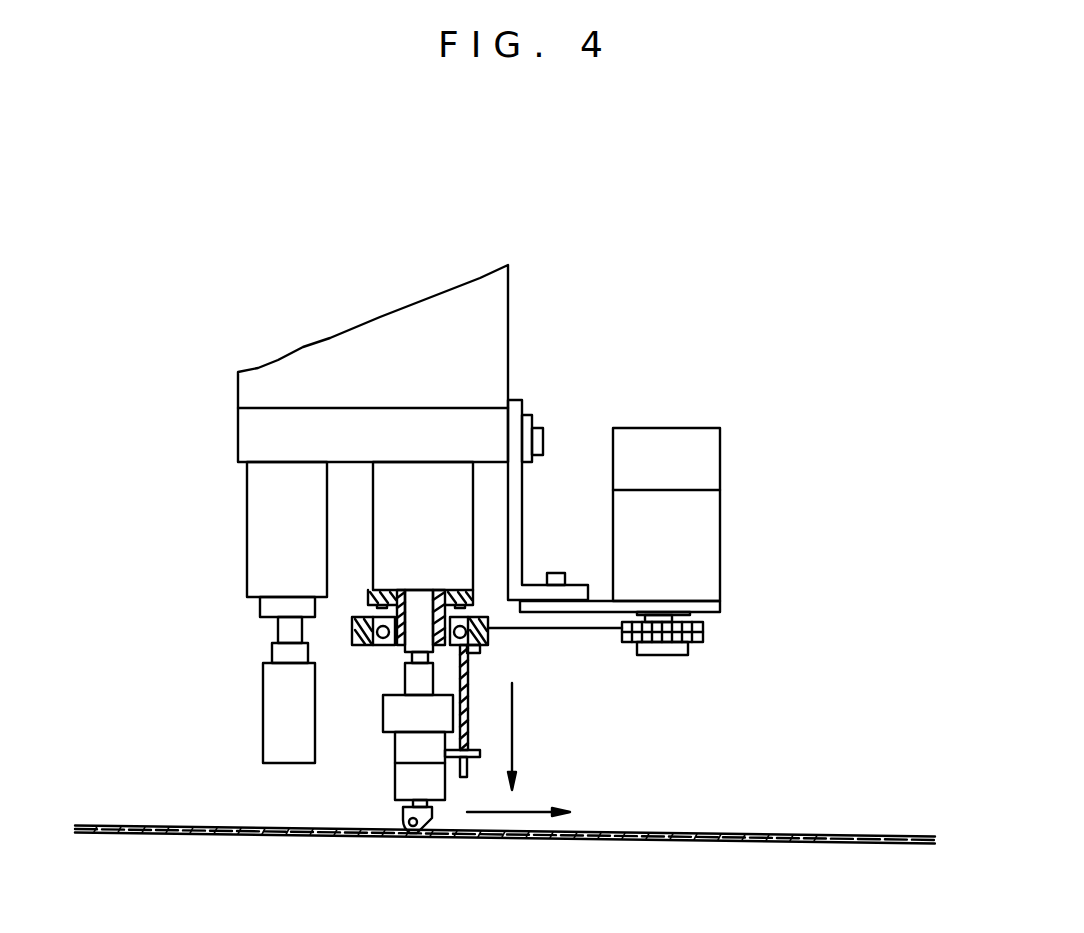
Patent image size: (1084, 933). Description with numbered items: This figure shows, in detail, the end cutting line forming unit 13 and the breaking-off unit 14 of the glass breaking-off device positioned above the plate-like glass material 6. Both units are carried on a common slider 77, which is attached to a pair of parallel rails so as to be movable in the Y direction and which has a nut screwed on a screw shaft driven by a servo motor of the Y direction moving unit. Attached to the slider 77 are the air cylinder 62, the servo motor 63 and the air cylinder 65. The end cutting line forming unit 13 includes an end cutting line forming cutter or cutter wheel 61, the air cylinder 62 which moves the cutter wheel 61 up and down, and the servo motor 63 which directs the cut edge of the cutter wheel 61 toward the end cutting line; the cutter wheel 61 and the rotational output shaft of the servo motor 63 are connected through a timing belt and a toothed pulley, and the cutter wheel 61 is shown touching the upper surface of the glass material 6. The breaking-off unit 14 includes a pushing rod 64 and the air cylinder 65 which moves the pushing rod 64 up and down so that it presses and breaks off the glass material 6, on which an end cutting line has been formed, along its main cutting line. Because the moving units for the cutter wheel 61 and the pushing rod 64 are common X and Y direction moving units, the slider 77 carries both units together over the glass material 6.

The plate-like glass material 6 is at (235, 837).
The end cutting line forming unit 13 is at (685, 701).
The breaking-off unit 14 is at (205, 630).
The cutter wheel 61 is at (410, 838).
The air cylinder 62 is at (450, 547).
The servo motor 63 is at (710, 532).
The pushing rod 64 is at (265, 718).
The air cylinder 65 is at (262, 552).
The slider 77 is at (333, 352).